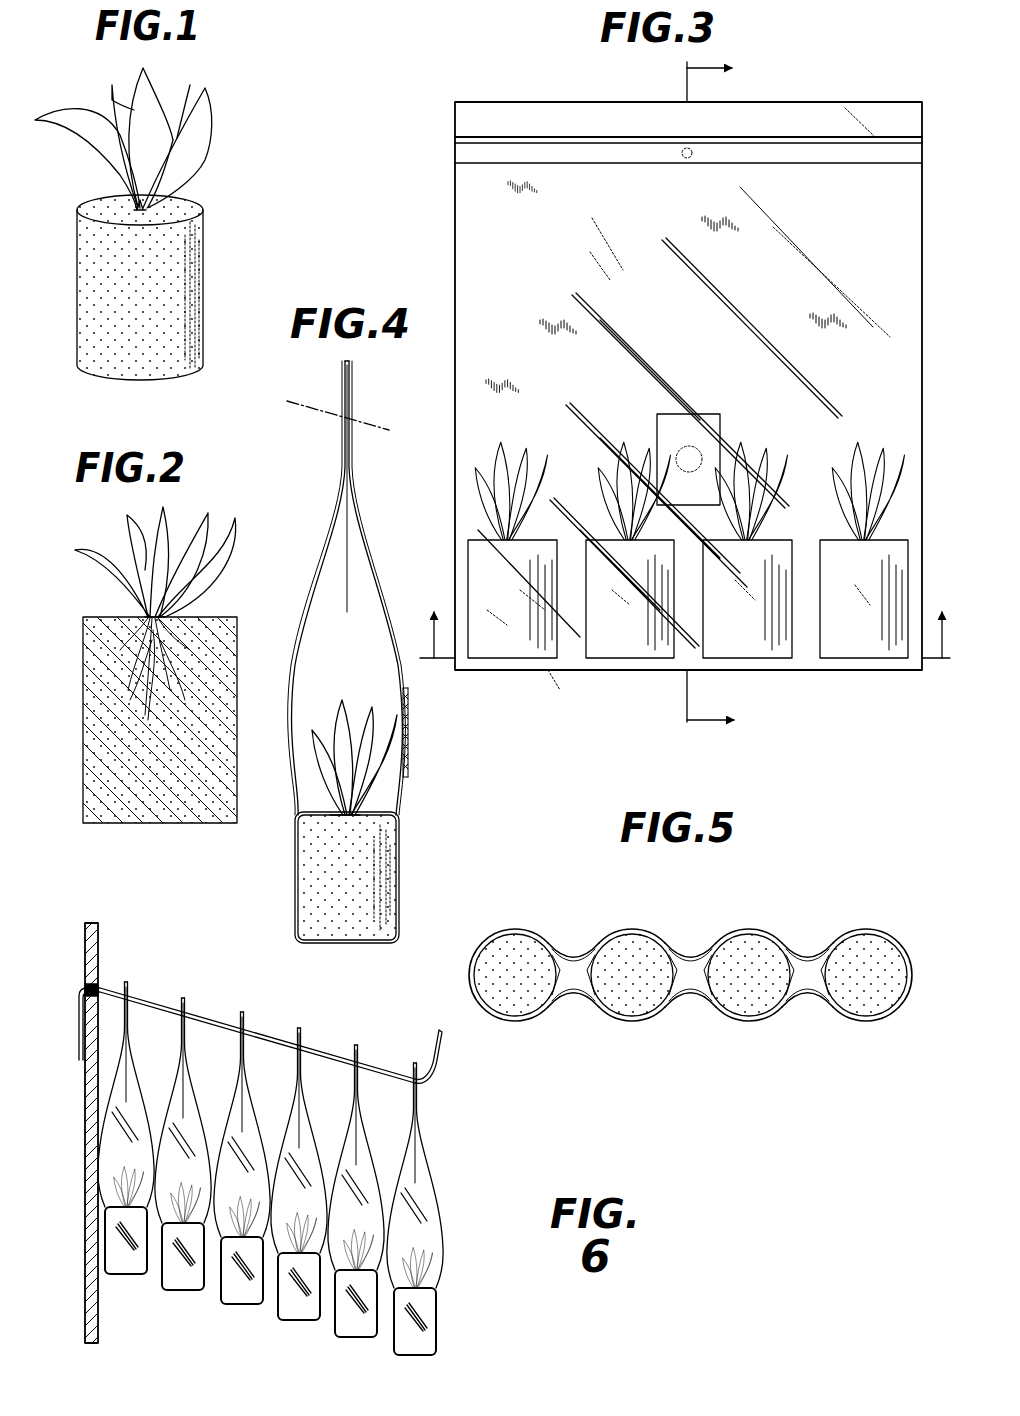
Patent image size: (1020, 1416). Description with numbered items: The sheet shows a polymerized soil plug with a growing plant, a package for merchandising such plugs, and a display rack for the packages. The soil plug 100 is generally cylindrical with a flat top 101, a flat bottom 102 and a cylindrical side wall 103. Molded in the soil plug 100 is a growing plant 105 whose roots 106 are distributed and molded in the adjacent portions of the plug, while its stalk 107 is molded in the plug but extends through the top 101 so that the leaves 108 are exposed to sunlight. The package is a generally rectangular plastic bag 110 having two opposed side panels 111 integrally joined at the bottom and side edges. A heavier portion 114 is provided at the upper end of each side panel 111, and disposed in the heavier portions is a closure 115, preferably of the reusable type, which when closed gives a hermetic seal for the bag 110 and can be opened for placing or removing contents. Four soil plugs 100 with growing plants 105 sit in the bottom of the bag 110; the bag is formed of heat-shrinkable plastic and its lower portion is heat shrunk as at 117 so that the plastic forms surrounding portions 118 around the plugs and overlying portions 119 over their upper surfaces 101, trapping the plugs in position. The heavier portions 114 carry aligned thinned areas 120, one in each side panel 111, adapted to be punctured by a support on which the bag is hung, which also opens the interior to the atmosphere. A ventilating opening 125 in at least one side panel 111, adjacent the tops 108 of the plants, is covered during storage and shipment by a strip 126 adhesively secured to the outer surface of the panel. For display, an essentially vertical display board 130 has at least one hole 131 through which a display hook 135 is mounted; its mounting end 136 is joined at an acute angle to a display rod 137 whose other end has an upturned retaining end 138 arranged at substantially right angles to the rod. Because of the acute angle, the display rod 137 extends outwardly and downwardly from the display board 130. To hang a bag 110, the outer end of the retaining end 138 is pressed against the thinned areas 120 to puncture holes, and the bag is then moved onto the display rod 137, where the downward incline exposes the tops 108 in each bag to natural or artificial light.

In FIG. 1, the soil plug 100 is at (160, 219).
In FIG. 2, the soil plug 100 is at (211, 670).
In FIG. 3, the soil plug 100 is at (688, 558).
In FIG. 4, the soil plug 100 is at (351, 828).
In FIG. 5, the soil plug 100 is at (690, 973).
In FIG. 6, the soil plug 100 is at (298, 1181).
In FIG. 1, the flat top 101 is at (190, 206).
In FIG. 4, the flat top 101 is at (300, 813).
In FIG. 2, the flat bottom 102 is at (152, 823).
In FIG. 4, the flat bottom 102 is at (345, 943).
In FIG. 5, the flat bottom 102 is at (647, 948).
In FIG. 1, the cylindrical side wall 103 is at (190, 275).
In FIG. 2, the cylindrical side wall 103 is at (211, 735).
In FIG. 4, the cylindrical side wall 103 is at (380, 870).
In FIG. 5, the cylindrical side wall 103 is at (573, 953).
In FIG. 1, the growing plant 105 is at (119, 134).
In FIG. 2, the growing plant 105 is at (164, 552).
In FIG. 3, the growing plant 105 is at (690, 474).
In FIG. 4, the growing plant 105 is at (322, 747).
In FIG. 6, the growing plant 105 is at (298, 1168).
In FIG. 2, the roots 106 is at (123, 657).
In FIG. 1, the stalk 107 is at (133, 207).
In FIG. 2, the stalk 107 is at (167, 617).
In FIG. 4, the stalk 107 is at (333, 812).
In FIG. 1, the leaves 108 is at (160, 113).
In FIG. 2, the leaves 108 is at (187, 527).
In FIG. 3, the leaves 108 is at (595, 475).
In FIG. 4, the leaves 108 is at (330, 728).
In FIG. 6, the leaves 108 is at (423, 1254).
In FIG. 3, the plastic bag 110 is at (670, 394).
In FIG. 4, the plastic bag 110 is at (355, 666).
In FIG. 6, the plastic bag 110 is at (264, 1181).
In FIG. 3, the side panels 111 is at (509, 276).
In FIG. 4, the side panels 111 is at (322, 560).
In FIG. 6, the side panels 111 is at (298, 1168).
In FIG. 3, the heavier portion 114 is at (490, 112).
In FIG. 4, the heavier portion 114 is at (365, 373).
In FIG. 3, the closure 115 is at (555, 140).
In FIG. 4, the closure 115 is at (352, 400).
In FIG. 5, the heat-shrunk portion 117 is at (690, 998).
In FIG. 4, the surrounding portions 118 is at (296, 905).
In FIG. 5, the surrounding portions 118 is at (713, 1017).
In FIG. 4, the overlying portions 119 is at (396, 820).
In FIG. 3, the thinned areas 120 is at (683, 157).
In FIG. 4, the thinned areas 120 is at (352, 418).
In FIG. 3, the ventilating opening 125 is at (690, 447).
In FIG. 4, the ventilating opening 125 is at (409, 745).
In FIG. 3, the strip 126 is at (693, 413).
In FIG. 4, the strip 126 is at (409, 700).
In FIG. 6, the display board 130 is at (85, 942).
In FIG. 6, the hole 131 is at (97, 984).
In FIG. 6, the display hook 135 is at (254, 1007).
In FIG. 6, the mounting end 136 is at (78, 1036).
In FIG. 4, the display rod 137 is at (287, 405).
In FIG. 6, the display rod 137 is at (270, 1036).
In FIG. 6, the retaining end 138 is at (440, 1048).